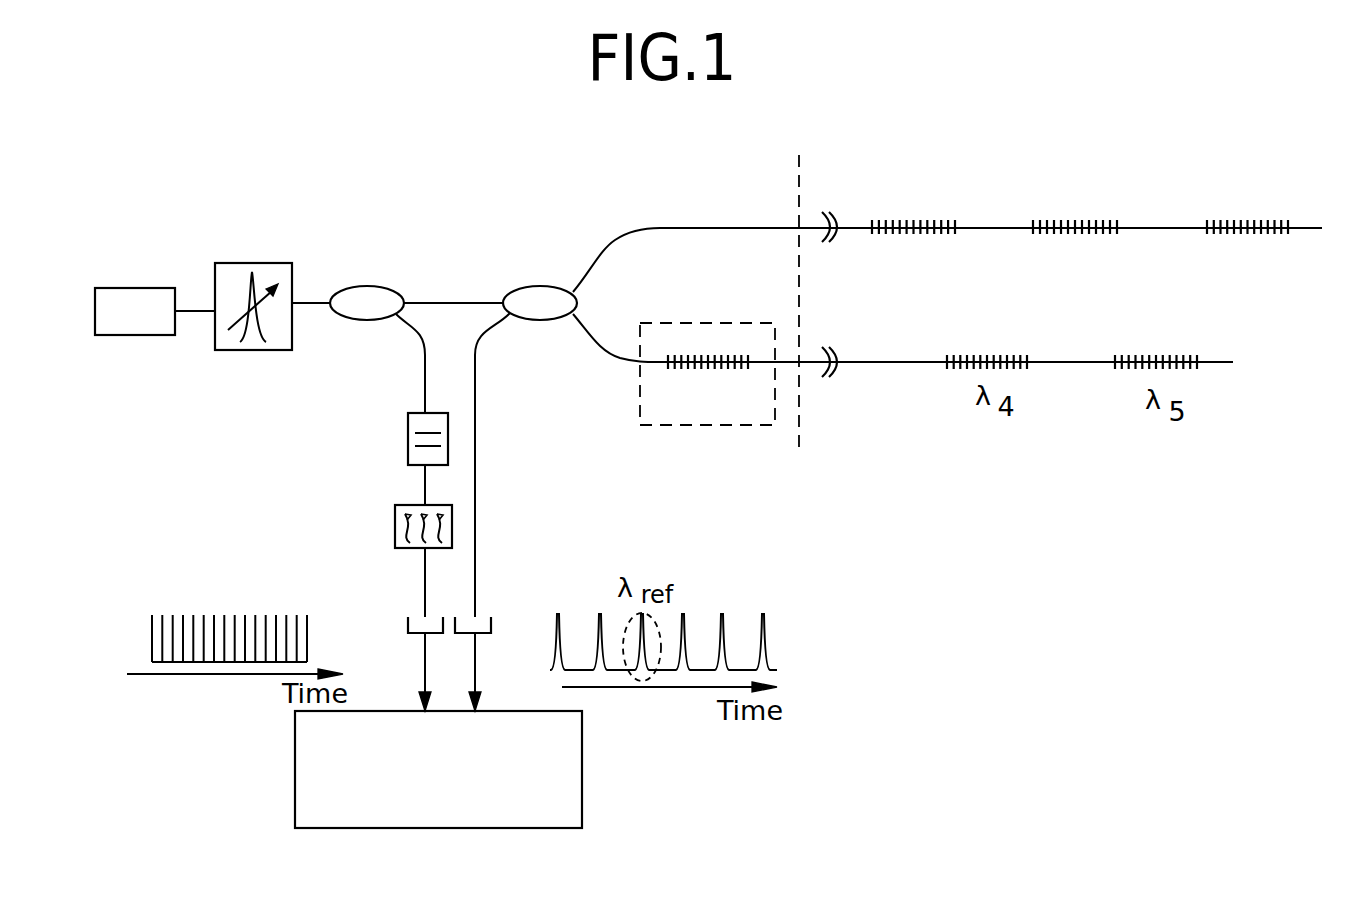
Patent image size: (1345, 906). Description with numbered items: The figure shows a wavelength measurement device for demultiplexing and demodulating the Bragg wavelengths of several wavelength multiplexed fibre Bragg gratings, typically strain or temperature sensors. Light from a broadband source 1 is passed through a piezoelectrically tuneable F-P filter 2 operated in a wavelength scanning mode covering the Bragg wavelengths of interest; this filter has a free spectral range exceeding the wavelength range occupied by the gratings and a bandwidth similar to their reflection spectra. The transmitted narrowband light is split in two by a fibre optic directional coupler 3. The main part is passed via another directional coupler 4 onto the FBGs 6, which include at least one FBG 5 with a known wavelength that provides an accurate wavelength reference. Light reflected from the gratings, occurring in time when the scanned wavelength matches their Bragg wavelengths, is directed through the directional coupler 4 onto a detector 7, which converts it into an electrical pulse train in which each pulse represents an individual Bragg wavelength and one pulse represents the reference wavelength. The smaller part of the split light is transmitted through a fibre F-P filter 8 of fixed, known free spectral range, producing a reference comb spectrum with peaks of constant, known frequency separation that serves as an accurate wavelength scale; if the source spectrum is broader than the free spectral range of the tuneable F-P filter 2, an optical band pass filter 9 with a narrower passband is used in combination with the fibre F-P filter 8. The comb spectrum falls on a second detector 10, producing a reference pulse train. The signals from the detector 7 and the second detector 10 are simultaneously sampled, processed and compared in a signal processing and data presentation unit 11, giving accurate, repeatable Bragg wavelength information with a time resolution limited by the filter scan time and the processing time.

The broadband source 1 is at (135, 288).
The piezoelectrically tuneable F-P filter 2 is at (253, 288).
The fibre optic directional coupler 3 is at (367, 285).
The directional coupler 4 is at (540, 285).
The FBG with known wavelength 5 is at (707, 374).
The FBGs 6 is at (1080, 242).
The detector 7 is at (488, 625).
The fibre F-P filter 8 is at (407, 439).
The optical band pass filter 9 is at (409, 526).
The second detector 10 is at (405, 625).
The signal processing and data presentation unit 11 is at (438, 769).